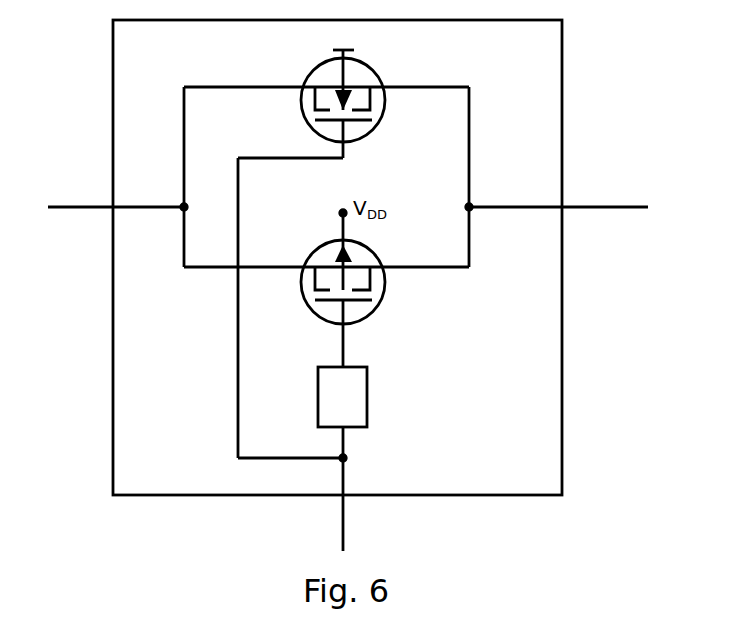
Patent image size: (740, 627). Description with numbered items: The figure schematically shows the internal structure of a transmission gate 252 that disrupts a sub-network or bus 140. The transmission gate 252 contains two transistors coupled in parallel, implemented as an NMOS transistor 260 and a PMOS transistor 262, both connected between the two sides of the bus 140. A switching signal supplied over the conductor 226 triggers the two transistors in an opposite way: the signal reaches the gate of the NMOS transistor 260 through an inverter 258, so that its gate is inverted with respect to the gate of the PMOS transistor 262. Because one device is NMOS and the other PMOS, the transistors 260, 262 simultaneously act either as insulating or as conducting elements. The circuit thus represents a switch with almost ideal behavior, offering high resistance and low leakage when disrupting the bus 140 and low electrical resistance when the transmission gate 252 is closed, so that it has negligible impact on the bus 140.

The sub-network or bus 140 is at (70, 207).
The conductor 226 is at (340, 537).
The transmission gate 252 is at (562, 437).
The inverter 258 is at (367, 397).
The NMOS transistor 260 is at (383, 298).
The PMOS transistor 262 is at (361, 140).